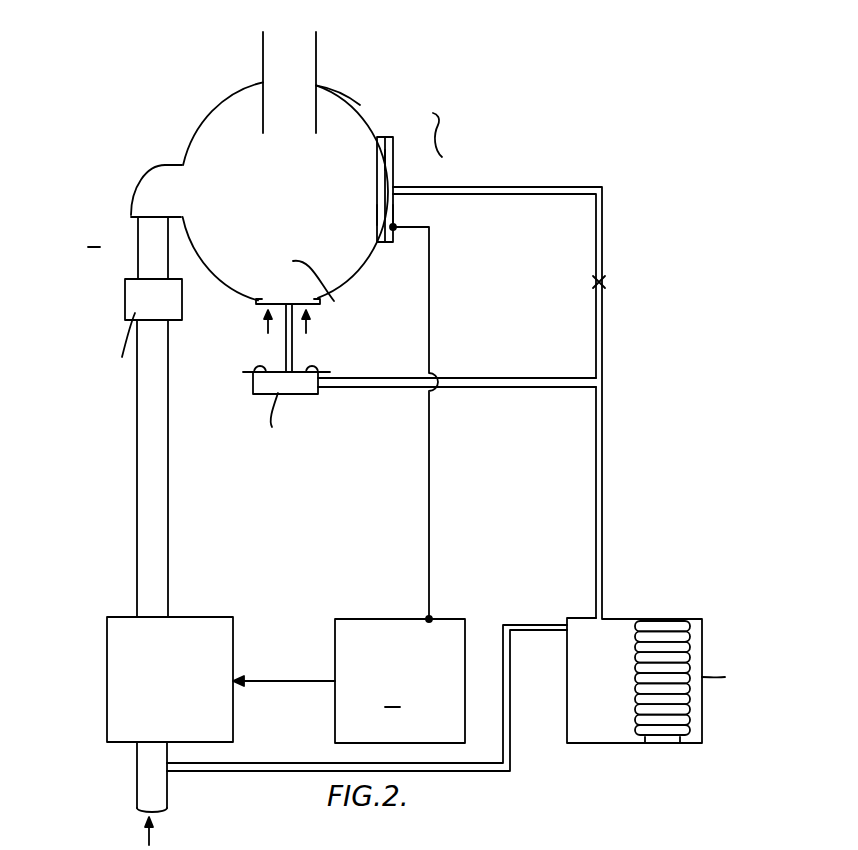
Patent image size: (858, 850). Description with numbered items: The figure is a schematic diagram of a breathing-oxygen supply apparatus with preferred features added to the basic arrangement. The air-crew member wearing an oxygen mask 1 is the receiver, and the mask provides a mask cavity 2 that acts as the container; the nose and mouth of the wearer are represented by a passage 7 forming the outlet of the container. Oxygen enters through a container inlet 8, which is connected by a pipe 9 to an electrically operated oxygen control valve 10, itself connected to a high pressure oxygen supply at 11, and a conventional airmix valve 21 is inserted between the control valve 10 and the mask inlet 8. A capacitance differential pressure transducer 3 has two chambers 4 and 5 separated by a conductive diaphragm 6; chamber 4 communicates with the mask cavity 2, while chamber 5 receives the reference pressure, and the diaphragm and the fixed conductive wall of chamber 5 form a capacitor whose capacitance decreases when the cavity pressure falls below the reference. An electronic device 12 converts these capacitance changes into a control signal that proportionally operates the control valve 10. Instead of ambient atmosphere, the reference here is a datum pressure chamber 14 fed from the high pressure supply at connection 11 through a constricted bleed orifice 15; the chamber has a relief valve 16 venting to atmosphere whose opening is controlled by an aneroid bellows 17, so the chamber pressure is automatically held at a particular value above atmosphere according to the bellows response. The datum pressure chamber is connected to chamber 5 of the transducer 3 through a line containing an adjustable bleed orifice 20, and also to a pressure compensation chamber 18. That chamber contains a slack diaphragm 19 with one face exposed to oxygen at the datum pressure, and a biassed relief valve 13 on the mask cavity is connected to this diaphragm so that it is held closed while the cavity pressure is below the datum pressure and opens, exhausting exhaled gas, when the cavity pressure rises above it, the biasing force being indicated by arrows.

The oxygen mask 1 is at (360, 105).
The mask cavity 2 is at (334, 100).
The capacitance differential pressure transducer 3 is at (397, 137).
The chamber 4 is at (377, 213).
The chamber 5 is at (393, 212).
The diaphragm 6 is at (386, 158).
The passage 7 is at (302, 58).
The container inlet 8 is at (132, 220).
The pipe 9 is at (153, 458).
The oxygen control valve 10 is at (227, 593).
The high pressure oxygen supply 11 is at (148, 775).
The electronic device 12 is at (380, 625).
The relief valve 13 is at (279, 303).
The datum pressure chamber 14 is at (567, 695).
The bleed orifice 15 is at (550, 622).
The relief valve 16 is at (660, 742).
The aneroid bellows 17 is at (668, 632).
The pressure compensation chamber 18 is at (258, 386).
The slack diaphragm 19 is at (303, 366).
The adjustable bleed orifice 20 is at (590, 284).
The airmix valve 21 is at (177, 308).